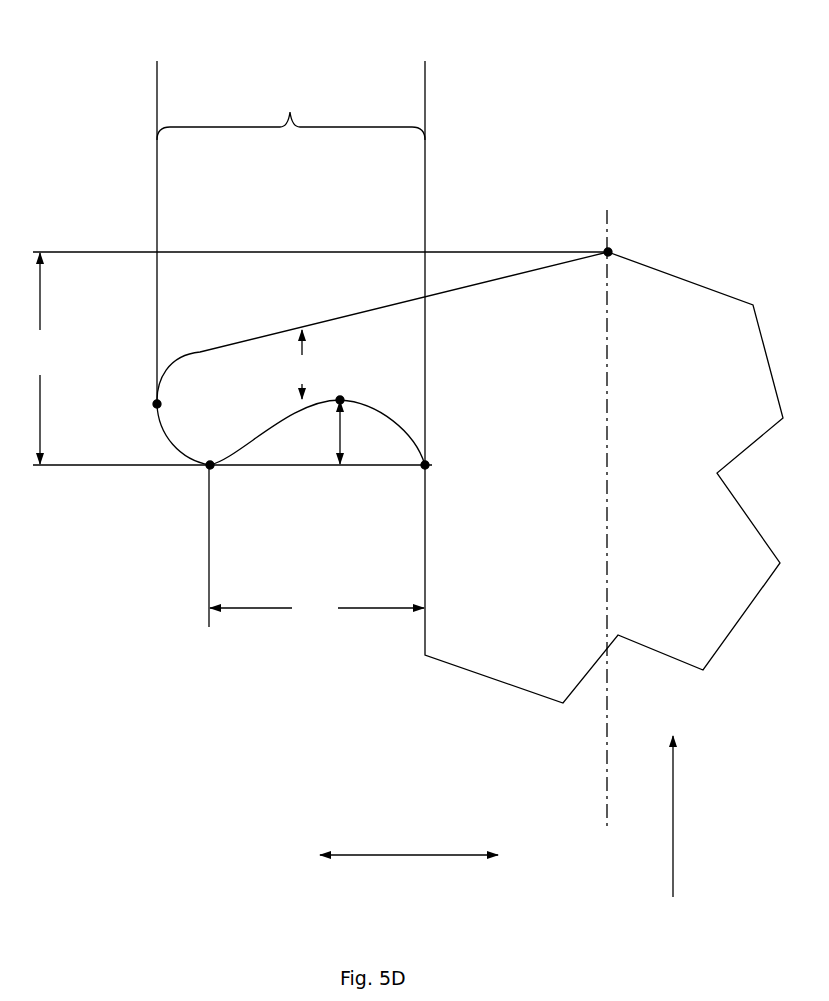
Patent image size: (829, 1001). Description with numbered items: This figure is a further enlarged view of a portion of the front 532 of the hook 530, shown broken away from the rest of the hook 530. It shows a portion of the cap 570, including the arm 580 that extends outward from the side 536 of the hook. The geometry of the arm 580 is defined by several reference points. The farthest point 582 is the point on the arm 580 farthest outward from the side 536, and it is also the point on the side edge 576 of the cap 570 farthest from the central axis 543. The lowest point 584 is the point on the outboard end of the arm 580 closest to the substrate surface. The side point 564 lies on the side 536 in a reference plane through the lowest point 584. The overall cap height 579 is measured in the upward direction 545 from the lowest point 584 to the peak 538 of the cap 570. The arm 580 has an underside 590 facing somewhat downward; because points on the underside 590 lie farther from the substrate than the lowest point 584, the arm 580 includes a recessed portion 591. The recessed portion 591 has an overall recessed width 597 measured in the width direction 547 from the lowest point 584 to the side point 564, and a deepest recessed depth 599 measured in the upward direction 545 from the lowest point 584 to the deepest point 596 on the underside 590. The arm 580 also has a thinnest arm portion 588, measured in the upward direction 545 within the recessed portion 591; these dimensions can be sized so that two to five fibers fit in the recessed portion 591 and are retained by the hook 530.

The hook 530 is at (508, 132).
The front 532 is at (477, 690).
The side 536 is at (414, 543).
The peak 538 is at (615, 243).
The central axis 543 is at (607, 218).
The upward direction 545 is at (673, 802).
The width direction 547 is at (408, 856).
The side point 564 is at (418, 472).
The cap 570 is at (550, 395).
The side edge 576 is at (155, 93).
The overall cap height 579 is at (38, 358).
The arm 580 is at (291, 111).
The farthest point 582 is at (150, 403).
The lowest point 584 is at (204, 470).
The thinnest arm portion 588 is at (300, 364).
The underside 590 is at (285, 508).
The recessed portion 591 is at (307, 413).
The deepest point 596 is at (345, 393).
The overall recessed width 597 is at (317, 609).
The deepest recessed depth 599 is at (340, 432).